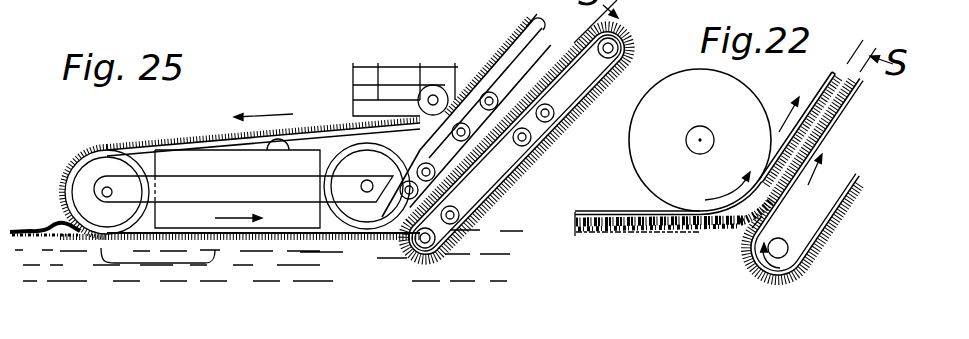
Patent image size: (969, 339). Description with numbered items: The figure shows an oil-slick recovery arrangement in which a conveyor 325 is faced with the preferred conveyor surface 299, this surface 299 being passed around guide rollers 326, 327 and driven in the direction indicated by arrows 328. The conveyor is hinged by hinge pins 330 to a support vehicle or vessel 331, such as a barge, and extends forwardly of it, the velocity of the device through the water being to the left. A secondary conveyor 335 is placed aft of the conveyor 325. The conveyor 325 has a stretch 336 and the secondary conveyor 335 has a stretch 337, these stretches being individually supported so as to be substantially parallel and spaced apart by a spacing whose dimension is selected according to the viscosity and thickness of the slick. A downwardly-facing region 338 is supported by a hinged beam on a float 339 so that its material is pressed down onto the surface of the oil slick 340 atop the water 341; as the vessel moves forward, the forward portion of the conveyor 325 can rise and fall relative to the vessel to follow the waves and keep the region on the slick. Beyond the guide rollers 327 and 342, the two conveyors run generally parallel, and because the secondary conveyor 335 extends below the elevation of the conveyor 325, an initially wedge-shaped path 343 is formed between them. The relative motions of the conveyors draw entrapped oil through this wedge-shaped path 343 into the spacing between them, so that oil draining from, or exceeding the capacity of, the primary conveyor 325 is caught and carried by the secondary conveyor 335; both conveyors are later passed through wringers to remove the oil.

In FIG. 25, the conveyor surface 299 is at (165, 143).
In FIG. 25, the conveyor 325 is at (215, 123).
In FIG. 22, the conveyor 325 is at (812, 80).
In FIG. 25, the guide roller 326 is at (97, 145).
In FIG. 25, the guide roller 327 is at (342, 157).
In FIG. 22, the guide roller 327 is at (632, 162).
In FIG. 25, the arrows 328 is at (48, 188).
In FIG. 25, the hinge pins 330 is at (361, 187).
In FIG. 25, the support vehicle or vessel 331 is at (422, 63).
In FIG. 25, the secondary conveyor 335 is at (517, 177).
In FIG. 22, the secondary conveyor 335 is at (834, 134).
In FIG. 25, the stretch 336 is at (549, 63).
In FIG. 25, the stretch 337 is at (600, 73).
In FIG. 25, the downwardly-facing region 338 is at (210, 266).
In FIG. 22, the downwardly-facing region 338 is at (607, 230).
In FIG. 25, the float 339 is at (330, 217).
In FIG. 25, the oil slick 340 is at (40, 210).
In FIG. 25, the water 341 is at (22, 273).
In FIG. 22, the guide roller 342 is at (790, 228).
In FIG. 22, the wedge-shaped path 343 is at (737, 227).